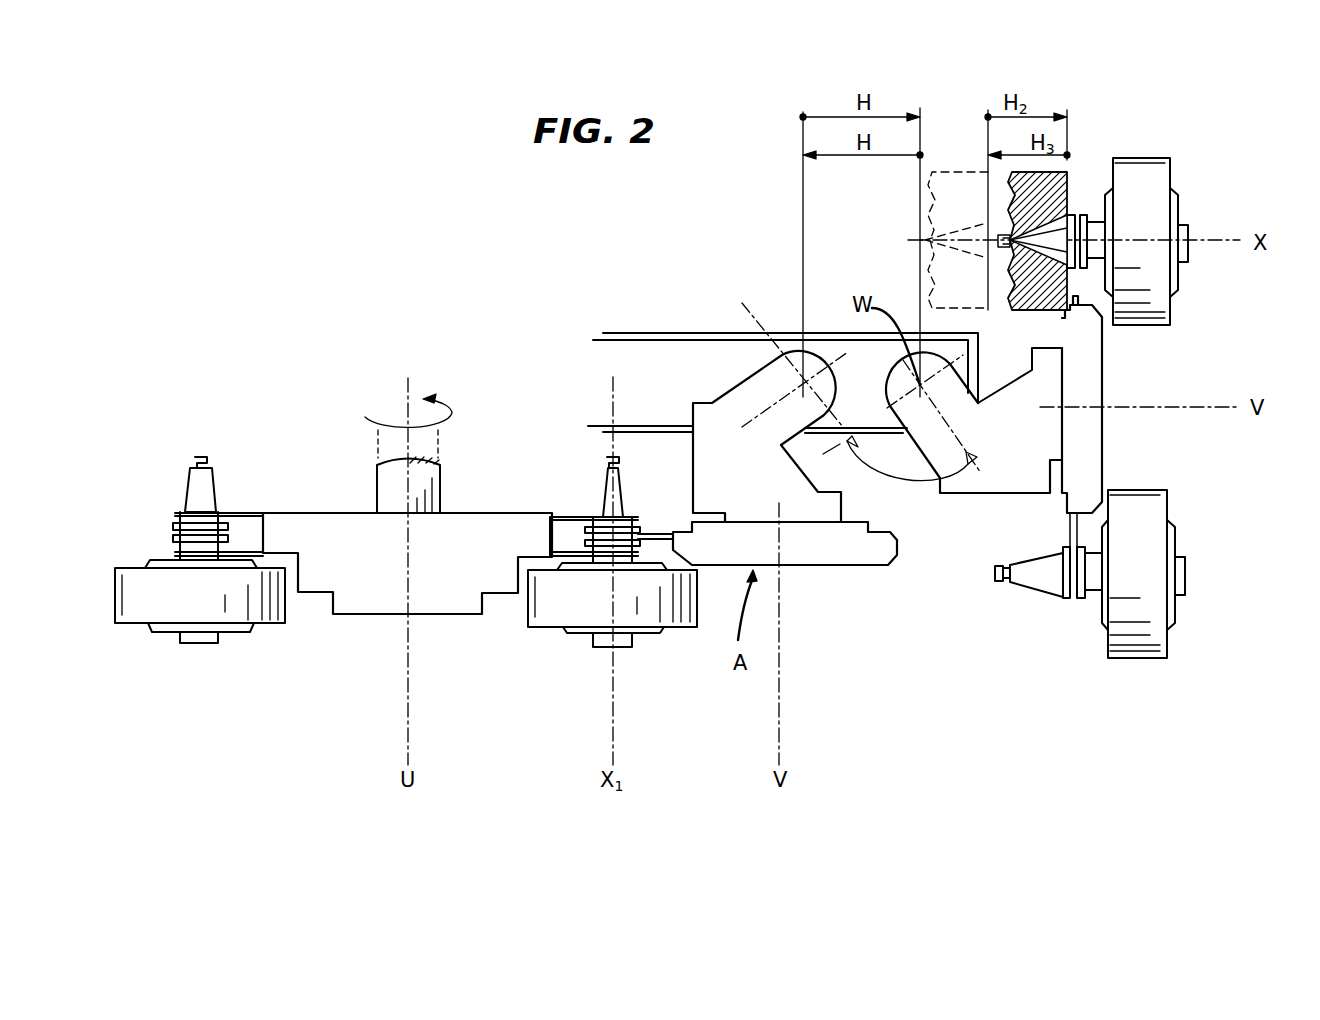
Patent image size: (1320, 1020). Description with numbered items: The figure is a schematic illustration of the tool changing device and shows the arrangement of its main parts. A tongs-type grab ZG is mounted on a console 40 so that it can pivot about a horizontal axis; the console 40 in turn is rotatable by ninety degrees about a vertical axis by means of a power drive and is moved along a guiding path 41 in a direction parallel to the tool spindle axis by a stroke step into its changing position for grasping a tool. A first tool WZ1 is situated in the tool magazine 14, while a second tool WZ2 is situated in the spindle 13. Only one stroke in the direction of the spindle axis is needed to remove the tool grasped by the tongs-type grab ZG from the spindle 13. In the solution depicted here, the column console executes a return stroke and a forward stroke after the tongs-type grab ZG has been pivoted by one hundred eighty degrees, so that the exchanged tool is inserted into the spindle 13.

The spindle 13 is at (1050, 197).
The tool magazine 14 is at (370, 587).
The console 40 is at (717, 480).
The guiding path 41 is at (597, 373).
The first tool WZ1 is at (140, 607).
The second tool WZ2 is at (563, 605).
The tongs-type grab ZG is at (837, 553).